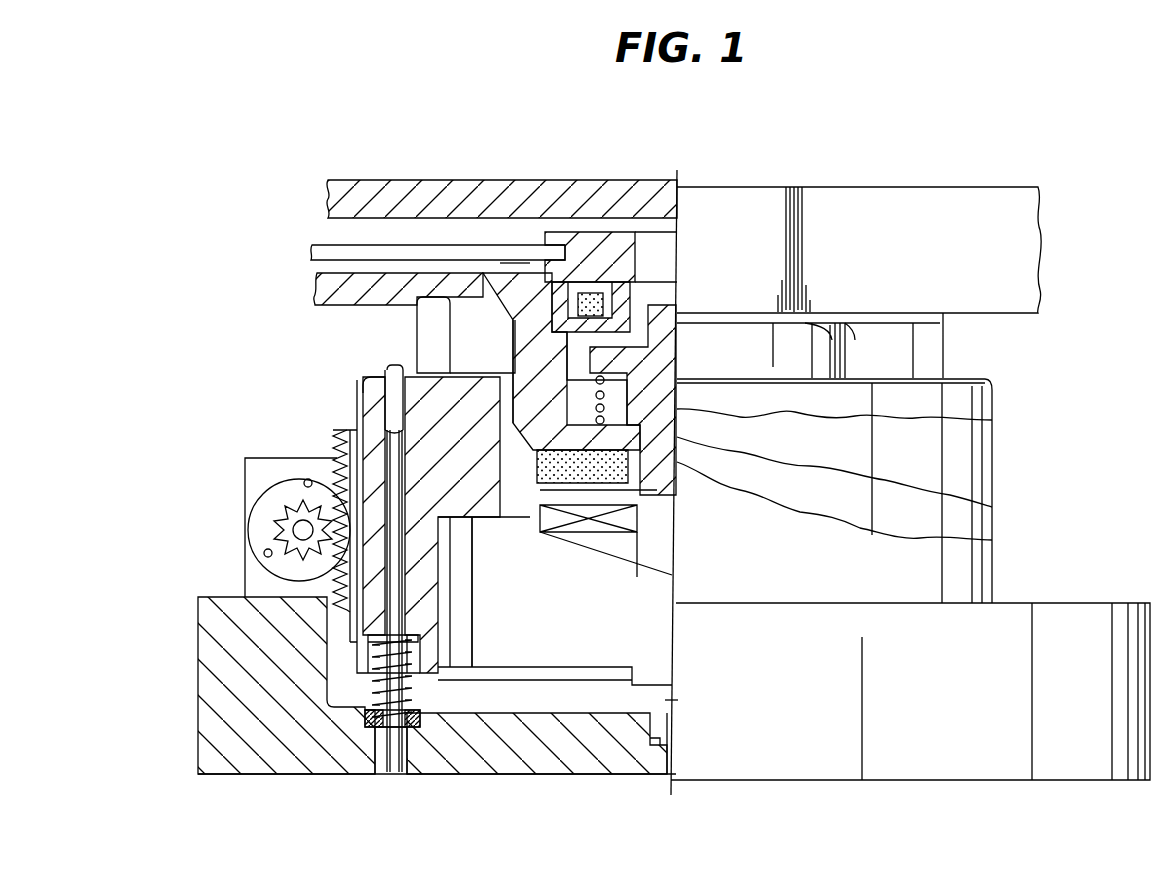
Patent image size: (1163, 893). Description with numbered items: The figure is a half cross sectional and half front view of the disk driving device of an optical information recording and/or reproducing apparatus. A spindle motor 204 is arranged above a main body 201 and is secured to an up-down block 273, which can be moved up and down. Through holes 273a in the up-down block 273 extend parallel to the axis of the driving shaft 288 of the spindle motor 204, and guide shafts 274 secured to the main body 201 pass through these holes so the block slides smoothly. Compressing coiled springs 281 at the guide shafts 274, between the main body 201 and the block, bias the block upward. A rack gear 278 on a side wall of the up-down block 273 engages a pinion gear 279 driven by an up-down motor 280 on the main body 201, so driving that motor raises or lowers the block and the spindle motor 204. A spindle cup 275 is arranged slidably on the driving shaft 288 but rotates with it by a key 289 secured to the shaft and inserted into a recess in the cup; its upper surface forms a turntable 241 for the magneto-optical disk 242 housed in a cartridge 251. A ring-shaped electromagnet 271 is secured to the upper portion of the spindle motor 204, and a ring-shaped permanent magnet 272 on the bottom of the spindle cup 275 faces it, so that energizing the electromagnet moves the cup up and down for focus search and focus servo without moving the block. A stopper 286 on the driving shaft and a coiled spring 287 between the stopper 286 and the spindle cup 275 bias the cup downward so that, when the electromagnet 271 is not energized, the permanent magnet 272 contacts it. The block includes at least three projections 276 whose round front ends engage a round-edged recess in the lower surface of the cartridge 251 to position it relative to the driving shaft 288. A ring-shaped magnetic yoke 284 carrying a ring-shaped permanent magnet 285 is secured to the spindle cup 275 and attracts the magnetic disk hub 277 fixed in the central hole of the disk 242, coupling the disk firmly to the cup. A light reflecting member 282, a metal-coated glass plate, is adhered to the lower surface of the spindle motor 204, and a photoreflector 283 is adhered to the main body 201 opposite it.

The main body 201 is at (198, 640).
The spindle motor 204 is at (527, 650).
The turntable 241 is at (532, 245).
The magneto-optical disk 242 is at (318, 245).
The cartridge 251 is at (372, 180).
The electromagnet 271 is at (597, 533).
The permanent magnet 272 is at (535, 487).
The up-down block 273 is at (360, 395).
The through holes 273a is at (397, 376).
The guide shafts 274 is at (393, 760).
The spindle cup 275 is at (505, 240).
The projections 276 is at (423, 323).
The disk hub 277 is at (592, 235).
The rack gear 278 is at (335, 440).
The pinion gear 279 is at (280, 530).
The up-down motor 280 is at (273, 492).
The compressing coiled springs 281 is at (373, 697).
The light reflecting member 282 is at (680, 700).
The photoreflector 283 is at (657, 742).
The magnetic yoke 284 is at (598, 292).
The permanent magnet 285 is at (598, 287).
The stopper 286 is at (680, 300).
The coiled spring 287 is at (992, 508).
The driving shaft 288 is at (992, 538).
The key 289 is at (992, 420).